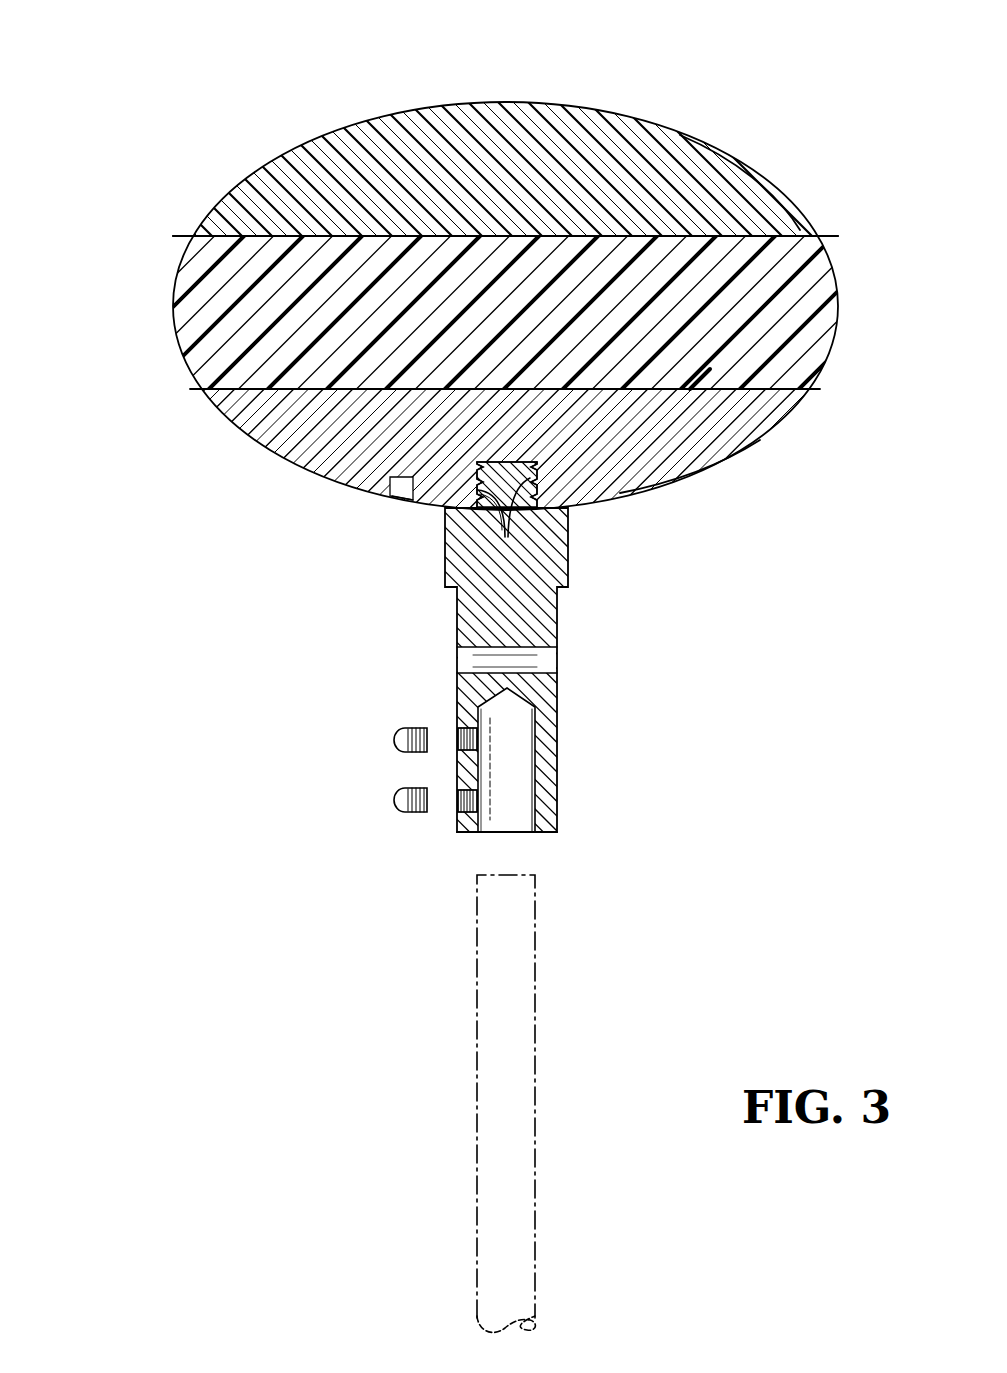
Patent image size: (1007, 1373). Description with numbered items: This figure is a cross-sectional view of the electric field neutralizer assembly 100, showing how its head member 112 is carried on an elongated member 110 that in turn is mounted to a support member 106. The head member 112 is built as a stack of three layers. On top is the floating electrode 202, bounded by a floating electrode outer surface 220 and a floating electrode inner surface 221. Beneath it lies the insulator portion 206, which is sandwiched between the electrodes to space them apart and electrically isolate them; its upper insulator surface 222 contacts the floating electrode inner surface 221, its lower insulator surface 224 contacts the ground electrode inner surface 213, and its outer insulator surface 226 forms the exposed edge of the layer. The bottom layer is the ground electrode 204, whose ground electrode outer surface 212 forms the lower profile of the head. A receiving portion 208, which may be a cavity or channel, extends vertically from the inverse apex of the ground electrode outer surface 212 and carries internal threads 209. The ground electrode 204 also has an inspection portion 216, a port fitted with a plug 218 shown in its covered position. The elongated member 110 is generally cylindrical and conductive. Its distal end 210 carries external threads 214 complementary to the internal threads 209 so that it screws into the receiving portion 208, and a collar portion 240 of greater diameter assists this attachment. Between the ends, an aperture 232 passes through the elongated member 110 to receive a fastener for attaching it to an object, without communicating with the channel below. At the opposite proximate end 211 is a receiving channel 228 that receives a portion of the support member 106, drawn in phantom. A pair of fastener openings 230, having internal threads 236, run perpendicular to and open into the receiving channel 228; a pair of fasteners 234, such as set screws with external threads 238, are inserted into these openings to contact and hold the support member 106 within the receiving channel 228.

The electric field neutralizer assembly 100 is at (138, 38).
The head member 112 is at (288, 116).
The elongated member 110 is at (328, 645).
The support member 106 is at (428, 1103).
The floating electrode outer surface 220 is at (680, 135).
The floating electrode 202 is at (773, 204).
The upper insulator surface 222 is at (560, 233).
The floating electrode inner surface 221 is at (675, 237).
The outer insulator surface 226 is at (178, 295).
The insulator portion 206 is at (822, 323).
The ground electrode inner surface 213 is at (675, 382).
The lower insulator surface 224 is at (560, 390).
The ground electrode 204 is at (782, 408).
The ground electrode outer surface 212 is at (690, 487).
The inspection portion 216 is at (392, 482).
The plug 218 is at (400, 503).
The receiving portion 208 is at (561, 481).
The internal threads 209 is at (476, 470).
The distal end 210 is at (508, 458).
The external threads 214 is at (504, 524).
The collar portion 240 is at (562, 568).
The aperture 232 is at (547, 655).
The receiving channel 228 is at (525, 740).
The proximate end 211 is at (557, 832).
The pair of fastener openings 230 is at (458, 735).
The internal threads 236 is at (477, 737).
The external threads 238 is at (398, 735).
The pair of fasteners 234 is at (390, 740).